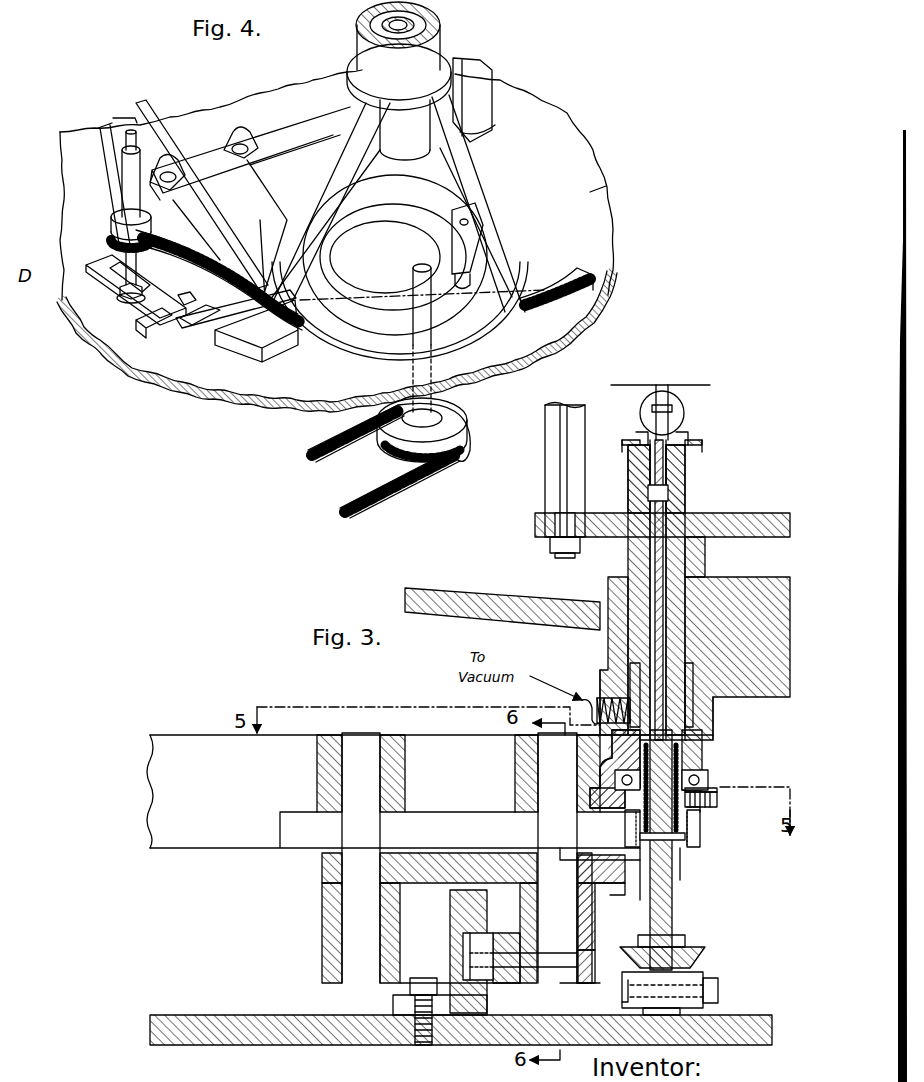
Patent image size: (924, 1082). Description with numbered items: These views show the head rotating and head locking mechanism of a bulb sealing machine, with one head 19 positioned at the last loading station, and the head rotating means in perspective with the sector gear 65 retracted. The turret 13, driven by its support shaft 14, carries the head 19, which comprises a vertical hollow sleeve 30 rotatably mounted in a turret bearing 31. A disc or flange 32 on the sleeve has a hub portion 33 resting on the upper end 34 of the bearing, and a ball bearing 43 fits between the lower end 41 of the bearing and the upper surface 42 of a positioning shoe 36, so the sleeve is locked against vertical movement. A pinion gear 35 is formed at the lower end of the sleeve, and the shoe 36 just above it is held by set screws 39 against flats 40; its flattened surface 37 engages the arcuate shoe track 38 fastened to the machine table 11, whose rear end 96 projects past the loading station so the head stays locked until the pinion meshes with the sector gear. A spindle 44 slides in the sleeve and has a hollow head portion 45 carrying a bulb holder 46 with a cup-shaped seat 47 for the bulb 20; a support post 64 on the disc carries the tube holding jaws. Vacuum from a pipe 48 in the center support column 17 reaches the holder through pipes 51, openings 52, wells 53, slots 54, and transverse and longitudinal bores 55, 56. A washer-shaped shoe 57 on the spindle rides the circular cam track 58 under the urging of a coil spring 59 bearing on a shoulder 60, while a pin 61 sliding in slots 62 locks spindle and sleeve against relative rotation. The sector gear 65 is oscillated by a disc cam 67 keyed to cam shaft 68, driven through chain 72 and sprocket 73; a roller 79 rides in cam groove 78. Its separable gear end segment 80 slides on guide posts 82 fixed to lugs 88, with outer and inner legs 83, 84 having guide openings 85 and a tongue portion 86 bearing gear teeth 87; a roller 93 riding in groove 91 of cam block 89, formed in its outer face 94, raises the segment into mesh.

In FIG. 4, the machine table 11 is at (597, 196).
In FIG. 3, the machine table 11 is at (188, 1013).
In FIG. 3, the turret 13 is at (466, 592).
In FIG. 4, the turret support shaft 14 is at (432, 33).
In FIG. 4, the center support column 17 is at (357, 18).
In FIG. 4, the head 19 is at (100, 213).
In FIG. 3, the head 19 is at (718, 484).
In FIG. 3, the bulb 20 is at (640, 410).
In FIG. 4, the hollow sleeve 30 is at (122, 160).
In FIG. 3, the hollow sleeve 30 is at (640, 592).
In FIG. 3, the turret bearing 31 is at (720, 724).
In FIG. 3, the disc or flange 32 is at (748, 513).
In FIG. 3, the hub portion 33 is at (706, 554).
In FIG. 3, the upper end of turret bearing 34 is at (745, 580).
In FIG. 4, the pinion gear 35 is at (112, 242).
In FIG. 3, the pinion gear 35 is at (700, 850).
In FIG. 4, the positioning disc or shoe 36 is at (118, 200).
In FIG. 3, the positioning disc or shoe 36 is at (740, 800).
In FIG. 4, the flattened surface 37 is at (112, 226).
In FIG. 3, the flattened surface 37 is at (630, 820).
In FIG. 4, the shoe track 38 is at (98, 128).
In FIG. 3, the shoe track 38 is at (604, 790).
In FIG. 3, the set screws 39 is at (717, 798).
In FIG. 3, the flats 40 is at (700, 812).
In FIG. 3, the lower end of turret bearing 41 is at (698, 768).
In FIG. 3, the upper surface of shoe 42 is at (715, 786).
In FIG. 3, the ball bearing 43 is at (702, 772).
In FIG. 4, the spindle 44 is at (90, 278).
In FIG. 3, the spindle 44 is at (674, 900).
In FIG. 3, the hollow head portion 45 is at (690, 468).
In FIG. 3, the bulb holder 46 is at (688, 434).
In FIG. 3, the cup-shaped seat 47 is at (638, 434).
In FIG. 4, the pipe 48 is at (422, 20).
In FIG. 3, the connections or pipes 51 is at (586, 700).
In FIG. 3, the openings 52 is at (604, 698).
In FIG. 3, the wells 53 is at (626, 660).
In FIG. 3, the vertically elongated slots 54 is at (630, 680).
In FIG. 3, the transverse bore 55 is at (690, 730).
In FIG. 3, the longitudinal bore 56 is at (658, 562).
In FIG. 4, the washer-shaped shoe 57 is at (118, 300).
In FIG. 3, the washer-shaped shoe 57 is at (705, 950).
In FIG. 4, the circular cam track 58 is at (122, 283).
In FIG. 3, the circular cam track 58 is at (718, 992).
In FIG. 3, the compression coil spring 59 is at (745, 818).
In FIG. 3, the shoulder 60 is at (636, 832).
In FIG. 3, the pin 61 is at (685, 836).
In FIG. 3, the vertically elongated slots 62 is at (681, 850).
In FIG. 3, the support post 64 is at (553, 474).
In FIG. 4, the sector gear 65 is at (200, 265).
In FIG. 3, the sector gear 65 is at (200, 735).
In FIG. 4, the disc cam 67 is at (410, 200).
In FIG. 4, the cam shaft 68 is at (410, 415).
In FIG. 4, the chain 72 is at (375, 484).
In FIG. 4, the sprocket 73 is at (398, 468).
In FIG. 4, the cam groove 78 is at (448, 285).
In FIG. 4, the roller 79 is at (458, 280).
In FIG. 4, the gear end segment 80 is at (146, 322).
In FIG. 3, the gear end segment 80 is at (470, 847).
In FIG. 4, the guide posts 82 is at (176, 176).
In FIG. 3, the guide posts 82 is at (380, 825).
In FIG. 3, the outer depending leg 83 is at (600, 983).
In FIG. 3, the inner depending leg 84 is at (322, 965).
In FIG. 3, the guide openings 85 is at (322, 898).
In FIG. 3, the tongue portion 86 is at (606, 883).
In FIG. 4, the gear teeth 87 is at (133, 290).
In FIG. 3, the gear teeth 87 is at (625, 895).
In FIG. 4, the lugs 88 is at (175, 172).
In FIG. 3, the lugs 88 is at (317, 762).
In FIG. 4, the cam block 89 is at (270, 360).
In FIG. 3, the cam block 89 is at (450, 902).
In FIG. 4, the cam groove 91 is at (208, 328).
In FIG. 3, the cam groove 91 is at (466, 1015).
In FIG. 4, the roller 93 is at (186, 306).
In FIG. 3, the roller 93 is at (476, 933).
In FIG. 4, the outer vertical face 94 is at (255, 348).
In FIG. 3, the outer vertical face 94 is at (487, 1002).
In FIG. 4, the rear end of shoe track 96 is at (200, 250).